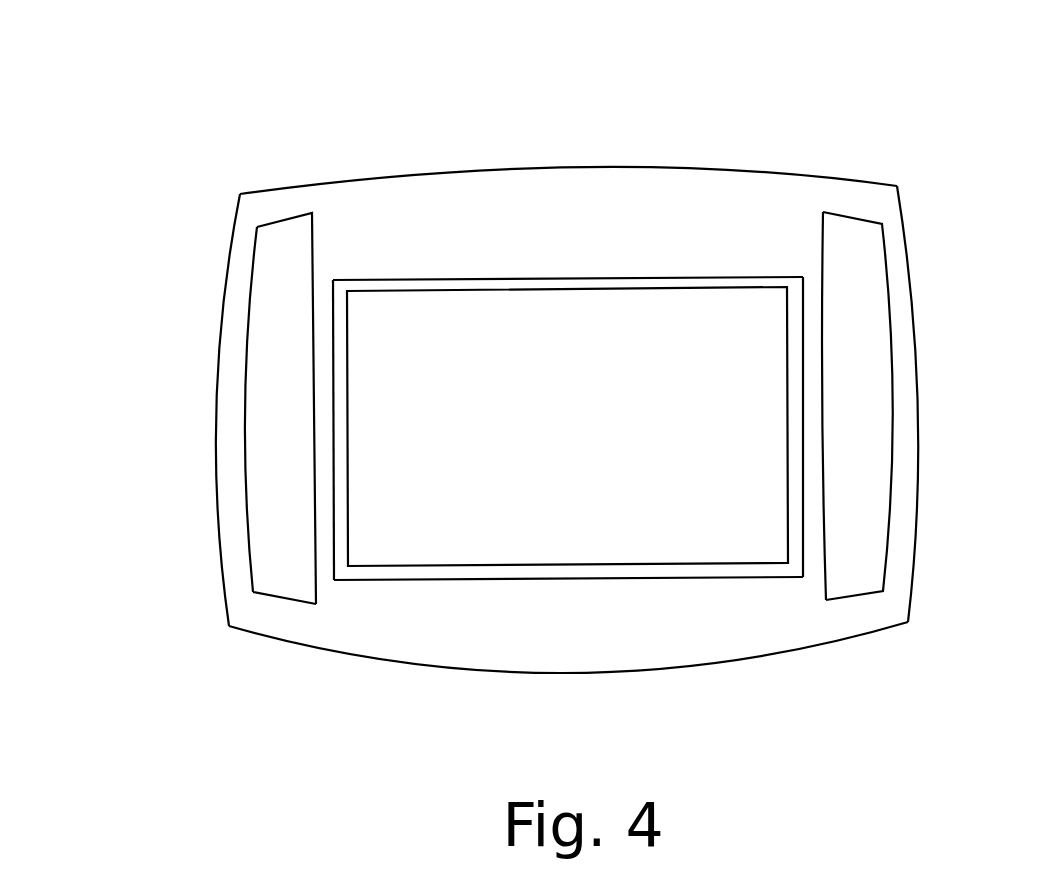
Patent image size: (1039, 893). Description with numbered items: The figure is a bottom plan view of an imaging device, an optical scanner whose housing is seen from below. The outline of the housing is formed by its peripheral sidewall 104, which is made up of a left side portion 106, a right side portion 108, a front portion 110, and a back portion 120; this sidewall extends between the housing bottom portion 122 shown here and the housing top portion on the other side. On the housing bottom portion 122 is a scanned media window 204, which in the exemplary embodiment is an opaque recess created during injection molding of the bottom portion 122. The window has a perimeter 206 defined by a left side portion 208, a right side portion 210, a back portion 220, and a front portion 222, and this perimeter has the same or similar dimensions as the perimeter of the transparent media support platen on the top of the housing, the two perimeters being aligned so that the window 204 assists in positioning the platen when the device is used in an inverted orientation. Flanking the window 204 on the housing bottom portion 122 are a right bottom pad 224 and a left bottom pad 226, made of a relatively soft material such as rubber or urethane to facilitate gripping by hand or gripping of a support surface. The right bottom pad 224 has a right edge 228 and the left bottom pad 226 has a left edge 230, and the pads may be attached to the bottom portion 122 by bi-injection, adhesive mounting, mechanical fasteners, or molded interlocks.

The peripheral sidewall 104 is at (220, 552).
The left side portion 106 is at (913, 590).
The right side portion 108 is at (220, 530).
The front portion 110 is at (622, 675).
The back portion 120 is at (588, 167).
The housing bottom portion 122 is at (667, 246).
The scanned media window 204 is at (545, 446).
The perimeter 206 is at (795, 513).
The left side portion 208 is at (797, 433).
The right side portion 210 is at (338, 408).
The back portion 220 is at (378, 280).
The front portion 222 is at (457, 572).
The right bottom pad 224 is at (273, 253).
The left bottom pad 226 is at (846, 312).
The right edge 228 is at (316, 596).
The left edge 230 is at (820, 250).